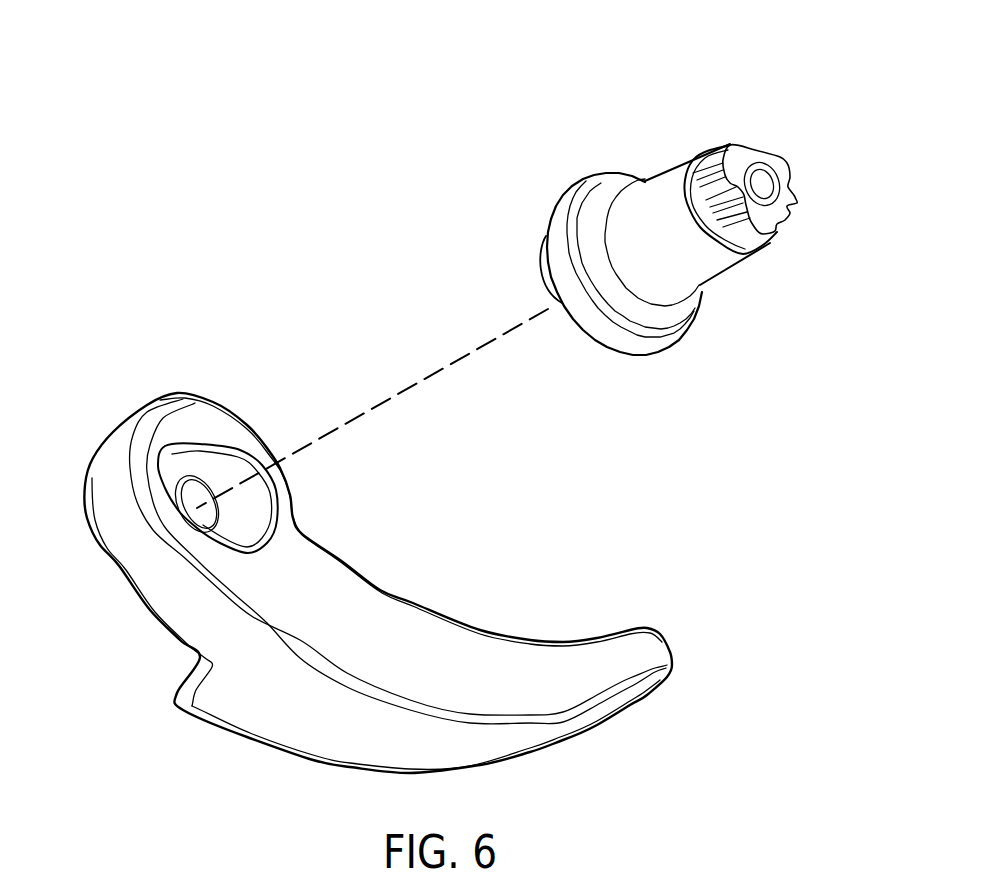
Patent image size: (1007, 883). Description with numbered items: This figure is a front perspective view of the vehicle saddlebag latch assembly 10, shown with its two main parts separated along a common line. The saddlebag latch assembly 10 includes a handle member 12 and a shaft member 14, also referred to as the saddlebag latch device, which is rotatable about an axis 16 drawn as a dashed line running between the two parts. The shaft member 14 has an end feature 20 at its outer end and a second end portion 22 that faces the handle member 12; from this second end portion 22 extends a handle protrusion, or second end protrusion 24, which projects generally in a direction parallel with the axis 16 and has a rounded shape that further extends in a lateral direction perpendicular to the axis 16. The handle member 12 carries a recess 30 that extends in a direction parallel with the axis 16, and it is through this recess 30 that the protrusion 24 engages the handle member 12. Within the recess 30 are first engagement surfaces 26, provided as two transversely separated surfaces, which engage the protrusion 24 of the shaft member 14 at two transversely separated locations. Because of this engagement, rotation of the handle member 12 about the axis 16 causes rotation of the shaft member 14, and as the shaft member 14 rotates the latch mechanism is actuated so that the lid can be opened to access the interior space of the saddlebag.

The saddlebag latch assembly 10 is at (430, 125).
The handle member 12 is at (95, 396).
The shaft member 14 is at (709, 86).
The axis 16 is at (399, 393).
The drive socket 20 is at (790, 180).
The second end portion 22 is at (566, 168).
The second end protrusion 24 is at (540, 270).
The first engagement surfaces 26 is at (222, 467).
The recess 30 is at (192, 474).